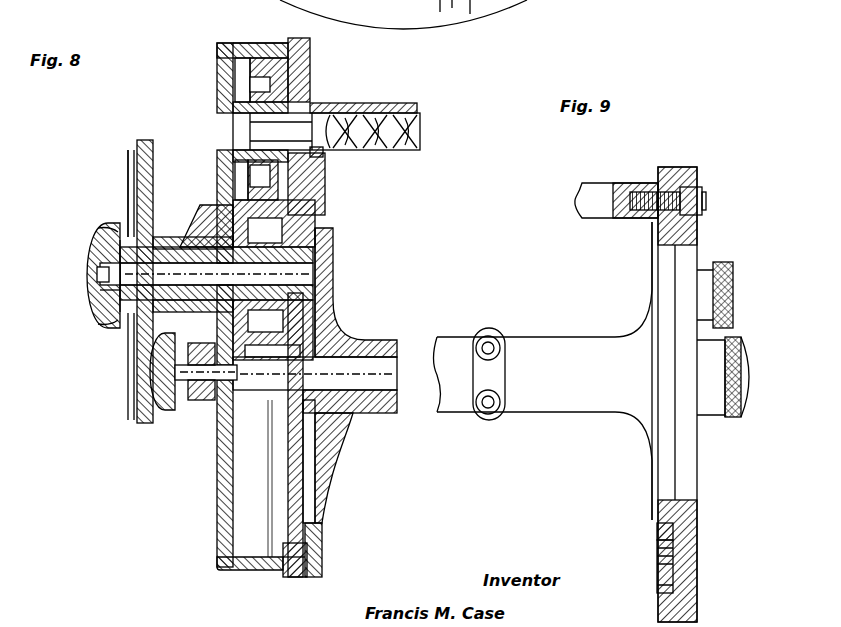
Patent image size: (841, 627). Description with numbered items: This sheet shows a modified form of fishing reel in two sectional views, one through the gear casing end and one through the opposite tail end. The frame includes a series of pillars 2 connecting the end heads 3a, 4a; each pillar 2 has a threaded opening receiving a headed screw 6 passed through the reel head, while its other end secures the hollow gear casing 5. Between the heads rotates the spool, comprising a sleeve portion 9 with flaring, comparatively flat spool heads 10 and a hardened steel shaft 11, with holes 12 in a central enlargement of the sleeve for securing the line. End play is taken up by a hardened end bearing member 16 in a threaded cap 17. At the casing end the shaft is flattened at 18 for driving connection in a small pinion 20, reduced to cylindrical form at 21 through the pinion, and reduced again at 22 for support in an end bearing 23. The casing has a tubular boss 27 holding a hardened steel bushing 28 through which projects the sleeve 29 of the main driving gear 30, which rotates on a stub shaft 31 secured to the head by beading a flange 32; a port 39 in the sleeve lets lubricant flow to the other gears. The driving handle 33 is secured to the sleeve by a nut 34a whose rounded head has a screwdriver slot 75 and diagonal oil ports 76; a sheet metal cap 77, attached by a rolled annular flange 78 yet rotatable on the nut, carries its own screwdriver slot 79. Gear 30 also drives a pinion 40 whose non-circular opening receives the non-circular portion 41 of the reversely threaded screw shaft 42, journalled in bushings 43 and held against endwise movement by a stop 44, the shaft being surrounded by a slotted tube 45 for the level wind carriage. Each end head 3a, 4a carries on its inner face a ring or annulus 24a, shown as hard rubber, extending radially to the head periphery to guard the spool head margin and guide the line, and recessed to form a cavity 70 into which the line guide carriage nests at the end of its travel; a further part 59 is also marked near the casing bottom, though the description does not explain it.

In FIG. 9, the pillar 2 is at (592, 190).
In FIG. 9, the end head 3a is at (690, 560).
In FIG. 8, the end head 4a is at (295, 577).
In FIG. 8, the gear casing 5 is at (243, 43).
In FIG. 9, the headed screw 6 is at (693, 197).
In FIG. 8, the sleeve portion 9 is at (372, 340).
In FIG. 9, the sleeve portion 9 is at (536, 343).
In FIG. 8, the spool head 10 is at (338, 278).
In FIG. 9, the spool head 10 is at (647, 453).
In FIG. 8, the shaft 11 is at (387, 413).
In FIG. 9, the holes 12 is at (488, 410).
In FIG. 9, the end bearing member 16 is at (755, 375).
In FIG. 9, the threaded cap 17 is at (735, 420).
In FIG. 8, the flattened portion 18 is at (312, 405).
In FIG. 8, the pinion 20 is at (243, 422).
In FIG. 8, the reduced cylindrical portion 21 is at (268, 395).
In FIG. 8, the reduced end 22 is at (165, 370).
In FIG. 8, the end bearing 23 is at (190, 410).
In FIG. 8, the ring or annulus 24a is at (322, 553).
In FIG. 9, the ring or annulus 24a is at (663, 562).
In FIG. 8, the tubular boss 27 is at (178, 237).
In FIG. 8, the bushing 28 is at (213, 228).
In FIG. 8, the sleeve extension 29 is at (162, 237).
In FIG. 8, the main driving gear 30 is at (222, 168).
In FIG. 8, the stub shaft 31 is at (325, 210).
In FIG. 8, the beaded flange 32 is at (340, 245).
In FIG. 8, the driving handle 33 is at (137, 157).
In FIG. 8, the nut 34a is at (128, 210).
In FIG. 8, the port 39 is at (216, 274).
In FIG. 8, the pinion 40 is at (300, 63).
In FIG. 8, the non-circular portion 41 is at (275, 95).
In FIG. 8, the screw shaft 42 is at (425, 130).
In FIG. 8, the bushing 43 is at (320, 105).
In FIG. 8, the stop or abutment 44 is at (217, 127).
In FIG. 8, the slotted tube 45 is at (405, 105).
In FIG. 8, the joint 59 is at (275, 567).
In FIG. 8, the cavity 70 is at (318, 162).
In FIG. 9, the cavity 70 is at (660, 530).
In FIG. 8, the screw driver slot 75 is at (95, 295).
In FIG. 8, the oil ports 76 is at (100, 322).
In FIG. 8, the sheet metal cap 77 is at (90, 255).
In FIG. 8, the annular flange 78 is at (120, 318).
In FIG. 8, the screw driver slot 79 is at (95, 275).